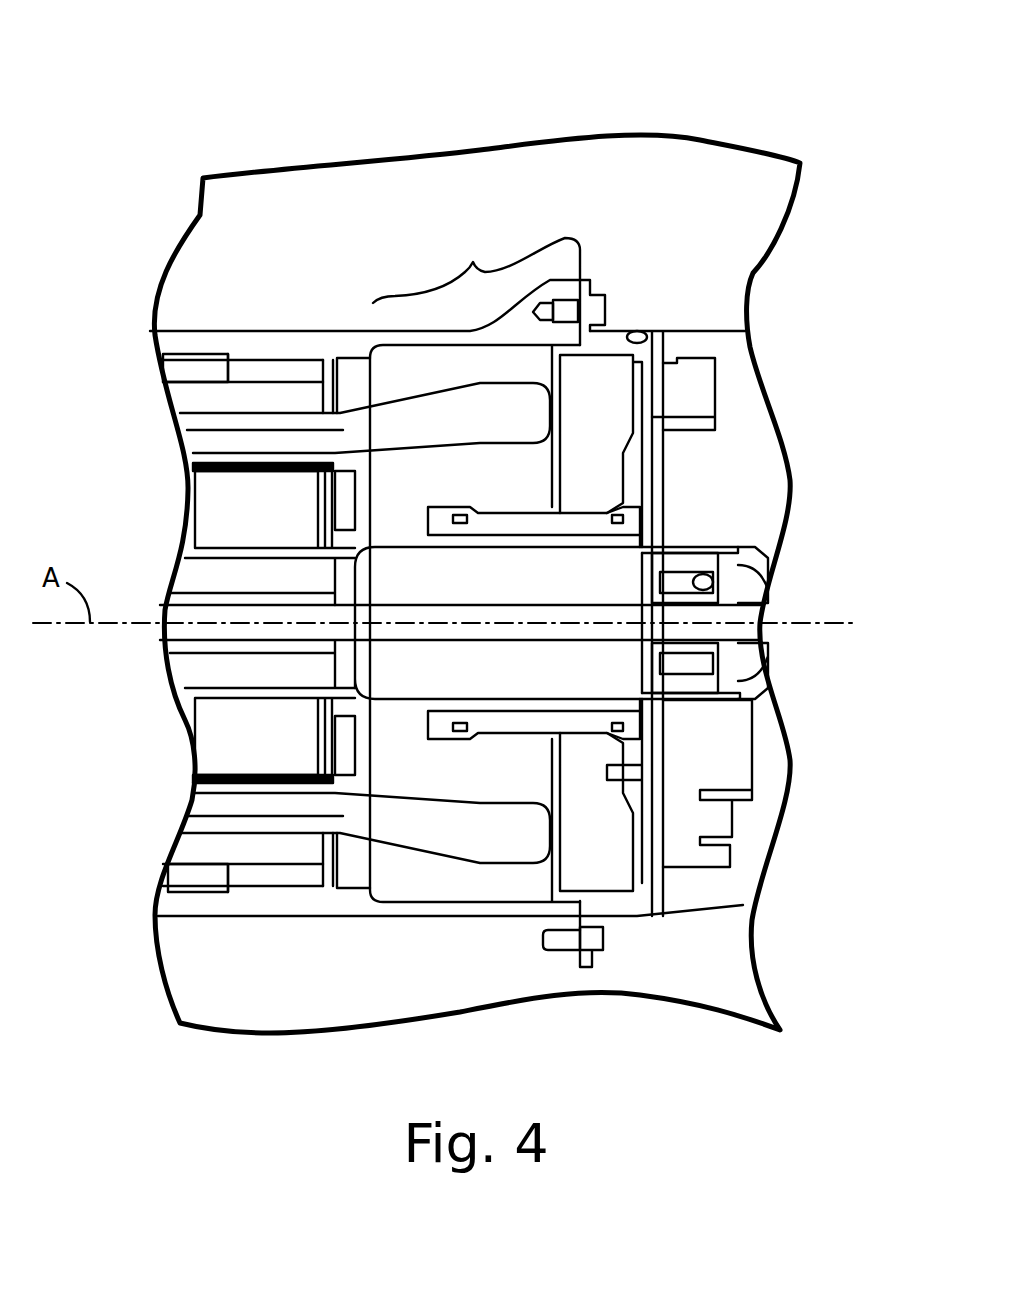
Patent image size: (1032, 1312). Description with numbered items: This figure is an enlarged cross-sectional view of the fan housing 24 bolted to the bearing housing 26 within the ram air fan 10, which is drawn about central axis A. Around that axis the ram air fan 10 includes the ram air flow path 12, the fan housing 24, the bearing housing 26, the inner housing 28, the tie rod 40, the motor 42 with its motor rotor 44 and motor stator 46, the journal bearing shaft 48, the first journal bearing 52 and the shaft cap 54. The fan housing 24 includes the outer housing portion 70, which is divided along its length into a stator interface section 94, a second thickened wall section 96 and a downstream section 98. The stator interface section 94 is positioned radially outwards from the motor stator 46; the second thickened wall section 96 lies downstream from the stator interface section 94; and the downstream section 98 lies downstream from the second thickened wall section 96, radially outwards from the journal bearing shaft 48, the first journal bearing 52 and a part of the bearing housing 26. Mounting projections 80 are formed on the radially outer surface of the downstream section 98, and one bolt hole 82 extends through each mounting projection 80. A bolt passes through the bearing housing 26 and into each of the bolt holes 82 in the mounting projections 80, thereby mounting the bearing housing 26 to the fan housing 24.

The ram air fan 10 is at (263, 127).
The ram air flow path 12 is at (407, 979).
The fan housing 24 is at (250, 348).
The bearing housing 26 is at (607, 343).
The inner housing 28 is at (710, 330).
The tie rod 40 is at (730, 633).
The motor 42 is at (257, 883).
The motor rotor 44 is at (225, 723).
The motor stator 46 is at (253, 873).
The journal bearing shaft 48 is at (700, 543).
The first journal bearing 52 is at (620, 527).
The shaft cap 54 is at (757, 680).
The outer housing portion 70 is at (303, 343).
The mounting projections 80 is at (542, 298).
The bolt holes 82 is at (548, 303).
The stator interface section 94 is at (332, 318).
The second thickened wall section 96 is at (333, 318).
The downstream section 98 is at (476, 291).